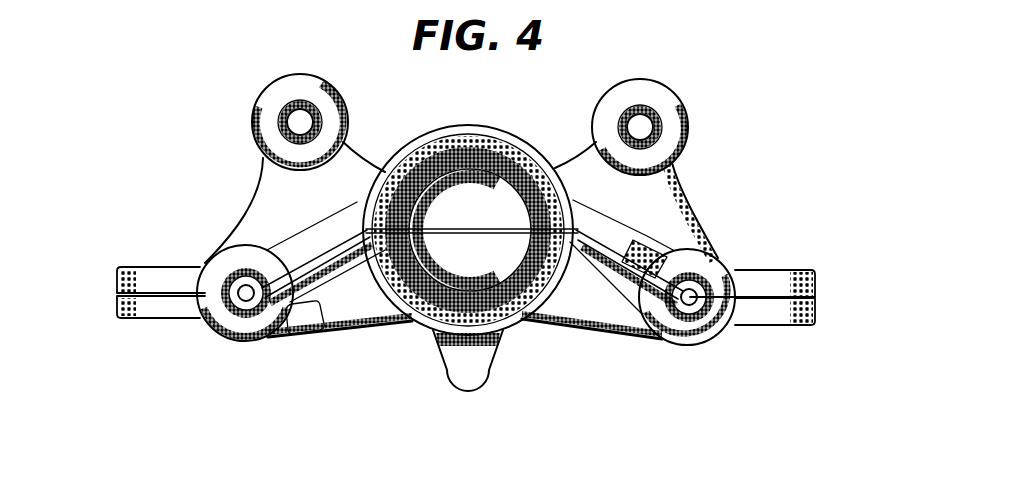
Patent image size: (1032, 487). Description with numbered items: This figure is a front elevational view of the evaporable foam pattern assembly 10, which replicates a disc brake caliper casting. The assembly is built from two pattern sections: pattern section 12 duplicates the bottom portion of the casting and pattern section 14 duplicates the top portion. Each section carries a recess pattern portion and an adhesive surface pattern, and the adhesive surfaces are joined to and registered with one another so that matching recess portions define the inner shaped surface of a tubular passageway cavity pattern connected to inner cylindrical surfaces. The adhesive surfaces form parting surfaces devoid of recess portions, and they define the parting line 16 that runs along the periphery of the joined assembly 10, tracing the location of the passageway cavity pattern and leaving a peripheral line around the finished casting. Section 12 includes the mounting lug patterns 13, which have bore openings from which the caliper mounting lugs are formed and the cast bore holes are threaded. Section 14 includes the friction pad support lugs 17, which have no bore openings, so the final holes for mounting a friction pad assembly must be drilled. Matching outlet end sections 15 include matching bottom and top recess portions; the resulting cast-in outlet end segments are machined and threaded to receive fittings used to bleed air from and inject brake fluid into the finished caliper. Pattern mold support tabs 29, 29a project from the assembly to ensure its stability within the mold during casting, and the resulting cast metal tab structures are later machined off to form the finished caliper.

The evaporable pattern assembly 10 is at (226, 196).
The pattern section 12 is at (654, 200).
The mounting lug patterns 13 is at (272, 93).
The pattern section 14 is at (597, 315).
The outlet end sections 15 is at (225, 335).
The parting line 16 is at (667, 280).
The friction pad support lugs 17 is at (472, 368).
The pattern mold support tab 29 is at (118, 280).
The pattern mold support tab 29a is at (118, 308).